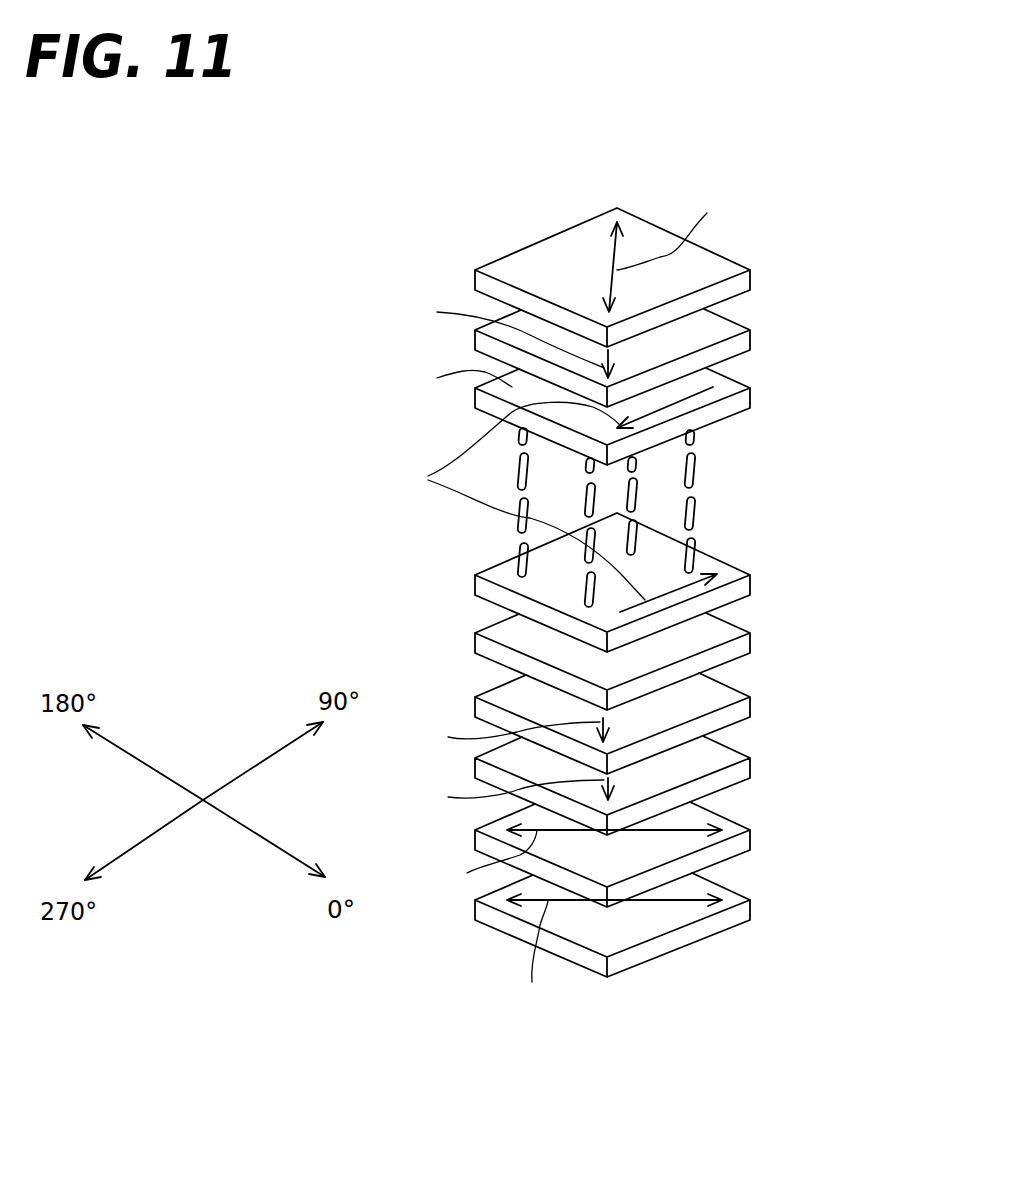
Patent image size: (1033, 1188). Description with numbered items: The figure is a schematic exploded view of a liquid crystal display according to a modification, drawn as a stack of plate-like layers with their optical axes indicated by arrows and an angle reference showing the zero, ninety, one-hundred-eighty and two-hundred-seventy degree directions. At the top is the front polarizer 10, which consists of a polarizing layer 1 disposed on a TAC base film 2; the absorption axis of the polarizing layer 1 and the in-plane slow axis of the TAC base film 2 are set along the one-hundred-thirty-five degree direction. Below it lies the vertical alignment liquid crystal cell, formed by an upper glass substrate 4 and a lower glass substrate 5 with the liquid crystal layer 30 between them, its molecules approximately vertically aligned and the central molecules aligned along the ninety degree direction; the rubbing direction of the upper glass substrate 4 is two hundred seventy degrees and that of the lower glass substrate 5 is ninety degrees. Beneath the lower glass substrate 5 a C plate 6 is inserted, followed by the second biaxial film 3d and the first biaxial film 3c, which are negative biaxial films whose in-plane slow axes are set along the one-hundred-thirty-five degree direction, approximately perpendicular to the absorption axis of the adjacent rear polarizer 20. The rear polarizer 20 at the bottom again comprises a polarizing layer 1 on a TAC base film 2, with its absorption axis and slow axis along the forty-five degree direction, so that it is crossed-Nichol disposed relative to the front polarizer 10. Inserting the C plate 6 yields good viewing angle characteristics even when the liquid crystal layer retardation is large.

The polarizing layer 1 is at (750, 270).
The TAC base film 2 is at (750, 330).
The front polarizer 10 is at (848, 247).
The upper glass substrate 4 is at (750, 388).
The liquid crystal layer 30 is at (760, 423).
The lower glass substrate 5 is at (750, 580).
The C plate 6 is at (750, 640).
The second biaxial film 3d is at (750, 700).
The first biaxial film 3c is at (750, 762).
The rear polarizer 20 is at (845, 825).